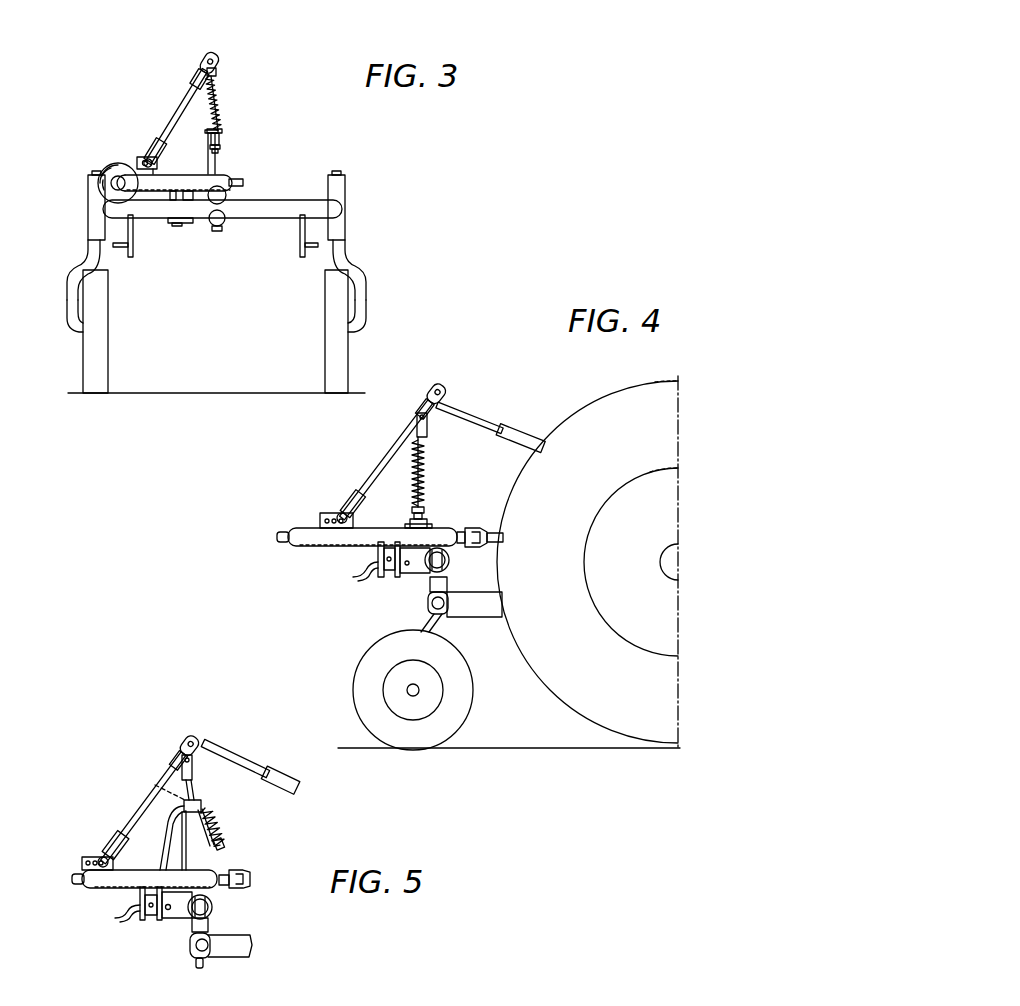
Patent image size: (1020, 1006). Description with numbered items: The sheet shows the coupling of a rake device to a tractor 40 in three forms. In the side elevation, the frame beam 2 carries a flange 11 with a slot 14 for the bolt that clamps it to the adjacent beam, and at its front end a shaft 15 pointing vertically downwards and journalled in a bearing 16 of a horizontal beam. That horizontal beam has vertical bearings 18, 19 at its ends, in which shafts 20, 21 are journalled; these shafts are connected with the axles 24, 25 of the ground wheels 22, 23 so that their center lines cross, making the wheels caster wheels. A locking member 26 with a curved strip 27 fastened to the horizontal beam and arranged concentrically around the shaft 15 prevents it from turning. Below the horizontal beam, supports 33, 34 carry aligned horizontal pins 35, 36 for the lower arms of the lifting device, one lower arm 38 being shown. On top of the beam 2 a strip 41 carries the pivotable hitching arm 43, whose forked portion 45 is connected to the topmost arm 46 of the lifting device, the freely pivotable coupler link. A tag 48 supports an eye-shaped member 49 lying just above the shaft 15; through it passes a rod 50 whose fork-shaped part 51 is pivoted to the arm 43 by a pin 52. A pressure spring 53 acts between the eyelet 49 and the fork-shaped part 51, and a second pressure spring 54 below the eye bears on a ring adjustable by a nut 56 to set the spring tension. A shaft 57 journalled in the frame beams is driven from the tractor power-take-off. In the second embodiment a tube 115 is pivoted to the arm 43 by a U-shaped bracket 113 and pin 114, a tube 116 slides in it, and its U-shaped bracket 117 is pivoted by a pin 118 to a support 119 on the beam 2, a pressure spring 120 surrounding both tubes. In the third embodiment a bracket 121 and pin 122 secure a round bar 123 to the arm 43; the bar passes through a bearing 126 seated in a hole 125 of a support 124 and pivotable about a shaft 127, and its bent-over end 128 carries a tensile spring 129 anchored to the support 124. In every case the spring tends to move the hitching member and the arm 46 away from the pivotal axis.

In FIG. 3, the beam 2 is at (186, 175).
In FIG. 4, the beam 2 is at (299, 545).
In FIG. 5, the beam 2 is at (82, 883).
In FIG. 3, the flange 11 is at (124, 166).
In FIG. 3, the slot 14 is at (108, 165).
In FIG. 3, the shaft 15 is at (220, 230).
In FIG. 3, the bearing 16 is at (212, 222).
In FIG. 3, the vertical bearing 18 is at (346, 190).
In FIG. 3, the vertical bearing 19 is at (88, 191).
In FIG. 3, the shaft 20 is at (345, 250).
In FIG. 3, the shaft 21 is at (87, 250).
In FIG. 3, the ground wheel 22 is at (325, 360).
In FIG. 4, the ground wheel 22 is at (455, 731).
In FIG. 3, the ground wheel 23 is at (104, 382).
In FIG. 3, the axle 24 is at (359, 330).
In FIG. 3, the axle 25 is at (73, 340).
In FIG. 3, the locking member 26 is at (187, 224).
In FIG. 4, the locking member 26 is at (372, 585).
In FIG. 5, the locking member 26 is at (137, 922).
In FIG. 3, the curved strip 27 is at (264, 200).
In FIG. 5, the curved strip 27 is at (176, 914).
In FIG. 3, the support 33 is at (133, 250).
In FIG. 3, the support 34 is at (300, 234).
In FIG. 3, the horizontal pin 35 is at (123, 250).
In FIG. 4, the horizontal pin 35 is at (428, 604).
In FIG. 5, the horizontal pin 35 is at (190, 950).
In FIG. 3, the horizontal pin 36 is at (310, 250).
In FIG. 4, the lower arm 38 is at (474, 620).
In FIG. 5, the lower arm 38 is at (240, 940).
In FIG. 4, the tractor 40 is at (590, 400).
In FIG. 3, the strip 41 is at (150, 155).
In FIG. 4, the strip 41 is at (326, 512).
In FIG. 5, the strip 41 is at (88, 856).
In FIG. 3, the arm 43 is at (187, 98).
In FIG. 4, the arm 43 is at (388, 445).
In FIG. 5, the arm 43 is at (135, 808).
In FIG. 3, the forked portion 45 is at (222, 52).
In FIG. 4, the forked portion 45 is at (432, 395).
In FIG. 5, the forked portion 45 is at (188, 737).
In FIG. 4, the topmost arm 46 is at (472, 414).
In FIG. 5, the topmost arm 46 is at (239, 749).
In FIG. 3, the tag 48 is at (205, 152).
In FIG. 3, the eye-shaped member 49 is at (222, 129).
In FIG. 3, the rod 50 is at (210, 110).
In FIG. 3, the fork-shaped part 51 is at (216, 75).
In FIG. 3, the pin 52 is at (200, 68).
In FIG. 3, the pressure spring 53 is at (221, 100).
In FIG. 3, the pressure spring 54 is at (223, 144).
In FIG. 3, the nut 56 is at (221, 152).
In FIG. 3, the shaft 57 is at (244, 183).
In FIG. 4, the U-shaped bracket 113 is at (432, 438).
In FIG. 4, the pin 114 is at (420, 418).
In FIG. 4, the tube 115 is at (428, 466).
In FIG. 4, the tube 116 is at (410, 508).
In FIG. 4, the U-shaped bracket 117 is at (428, 508).
In FIG. 4, the pin 118 is at (430, 523).
In FIG. 4, the support 119 is at (407, 523).
In FIG. 4, the pressure spring 120 is at (412, 470).
In FIG. 5, the bracket 121 is at (180, 766).
In FIG. 5, the pin 122 is at (192, 768).
In FIG. 5, the round bar 123 is at (198, 796).
In FIG. 5, the support 124 is at (162, 850).
In FIG. 5, the hole 125 is at (156, 786).
In FIG. 5, the bearing 126 is at (170, 828).
In FIG. 5, the shaft 127 is at (212, 802).
In FIG. 5, the end 128 is at (226, 845).
In FIG. 5, the tensile spring 129 is at (229, 823).